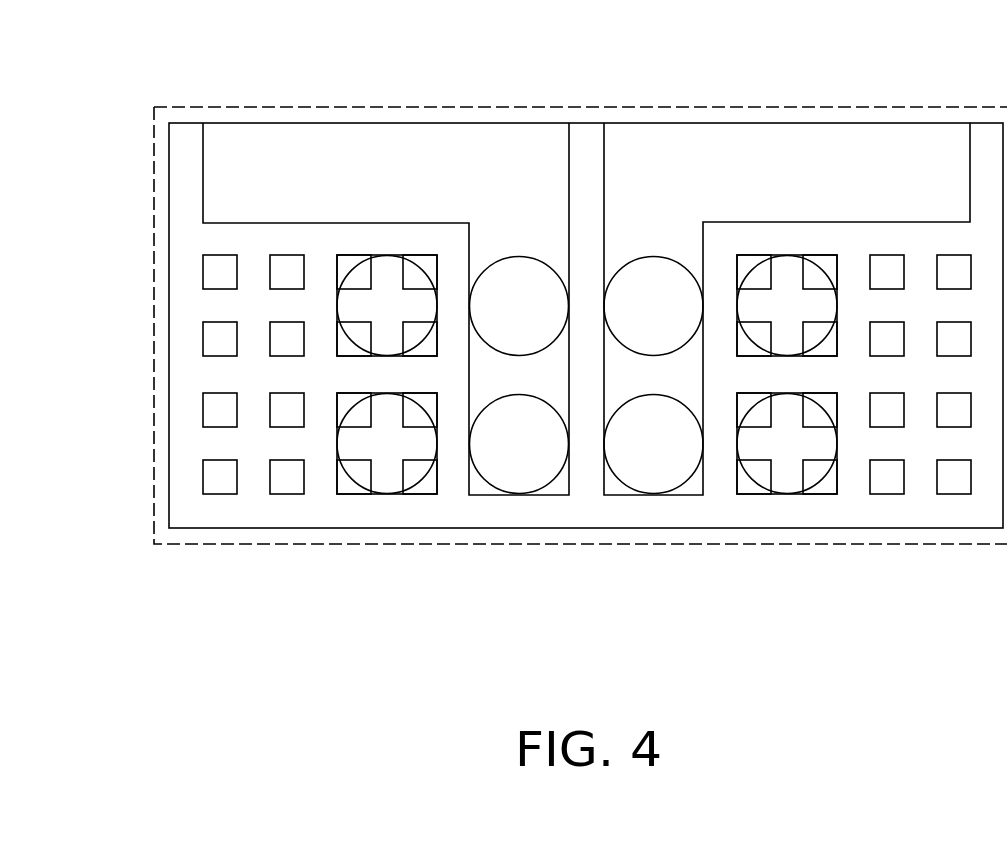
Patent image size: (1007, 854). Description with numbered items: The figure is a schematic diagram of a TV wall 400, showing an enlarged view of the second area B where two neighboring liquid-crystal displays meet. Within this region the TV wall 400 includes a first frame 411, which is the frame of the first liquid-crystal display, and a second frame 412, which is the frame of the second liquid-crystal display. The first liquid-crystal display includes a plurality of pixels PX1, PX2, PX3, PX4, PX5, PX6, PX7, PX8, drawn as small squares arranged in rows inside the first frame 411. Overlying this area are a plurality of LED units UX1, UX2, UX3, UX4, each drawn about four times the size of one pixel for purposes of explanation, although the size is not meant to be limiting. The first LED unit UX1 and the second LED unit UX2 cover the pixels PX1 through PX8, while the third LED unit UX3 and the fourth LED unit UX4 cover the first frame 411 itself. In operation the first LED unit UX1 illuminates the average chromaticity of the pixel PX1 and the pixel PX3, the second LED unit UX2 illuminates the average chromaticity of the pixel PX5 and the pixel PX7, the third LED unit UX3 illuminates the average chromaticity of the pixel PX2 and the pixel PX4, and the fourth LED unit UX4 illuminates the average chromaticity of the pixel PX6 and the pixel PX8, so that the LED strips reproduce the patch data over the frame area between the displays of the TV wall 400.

The TV wall 400 is at (872, 641).
The first frame 411 is at (260, 138).
The second frame 412 is at (916, 138).
The second area B is at (176, 102).
The first LED unit UX1 is at (387, 199).
The second LED unit UX2 is at (358, 508).
The third LED unit UX3 is at (540, 258).
The fourth LED unit UX4 is at (555, 484).
The pixel PX1 is at (347, 263).
The pixel PX2 is at (425, 262).
The pixel PX3 is at (343, 347).
The pixel PX4 is at (430, 348).
The pixel PX5 is at (343, 403).
The pixel PX6 is at (432, 412).
The pixel PX7 is at (348, 490).
The pixel PX8 is at (427, 490).